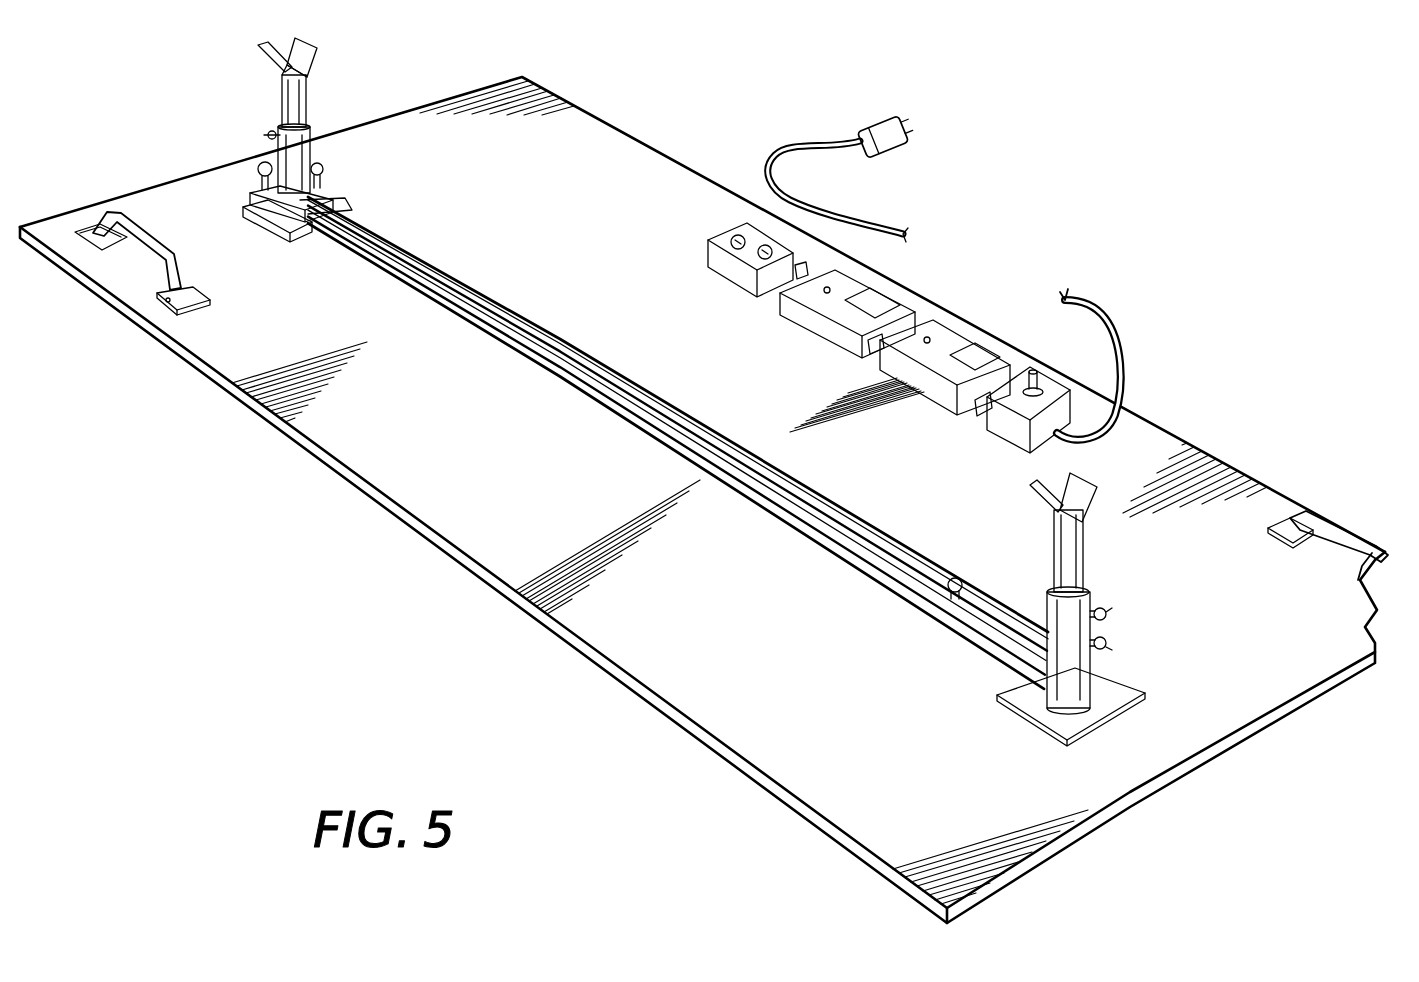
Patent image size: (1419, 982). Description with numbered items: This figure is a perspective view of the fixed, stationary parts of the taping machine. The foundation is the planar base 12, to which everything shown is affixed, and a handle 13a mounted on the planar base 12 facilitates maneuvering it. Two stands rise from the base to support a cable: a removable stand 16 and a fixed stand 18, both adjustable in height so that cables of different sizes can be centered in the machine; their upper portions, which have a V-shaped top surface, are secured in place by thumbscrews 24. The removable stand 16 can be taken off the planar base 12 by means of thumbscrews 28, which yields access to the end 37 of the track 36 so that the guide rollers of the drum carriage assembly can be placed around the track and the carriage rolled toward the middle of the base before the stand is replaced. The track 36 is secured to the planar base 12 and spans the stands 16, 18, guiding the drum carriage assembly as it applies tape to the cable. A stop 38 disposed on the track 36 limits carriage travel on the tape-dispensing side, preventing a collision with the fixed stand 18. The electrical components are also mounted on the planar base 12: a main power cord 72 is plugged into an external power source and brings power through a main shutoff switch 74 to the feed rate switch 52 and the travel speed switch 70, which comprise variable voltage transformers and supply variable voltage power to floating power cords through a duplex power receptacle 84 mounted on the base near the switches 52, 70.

The planar base 12 is at (490, 582).
The handle 13a is at (173, 247).
The removable stand 16 is at (339, 140).
The fixed stand 18 is at (1080, 670).
The thumbscrews 24 is at (272, 135).
The thumbscrews 28 is at (260, 172).
The track 36 is at (533, 324).
The end of the track 37 is at (347, 205).
The stop 38 is at (962, 578).
The feed rate switch 52 is at (978, 345).
The travel speed switch 70 is at (885, 282).
The main power cord 72 is at (1119, 378).
The main shutoff switch 74 is at (1033, 380).
The duplex power receptacle 84 is at (709, 262).